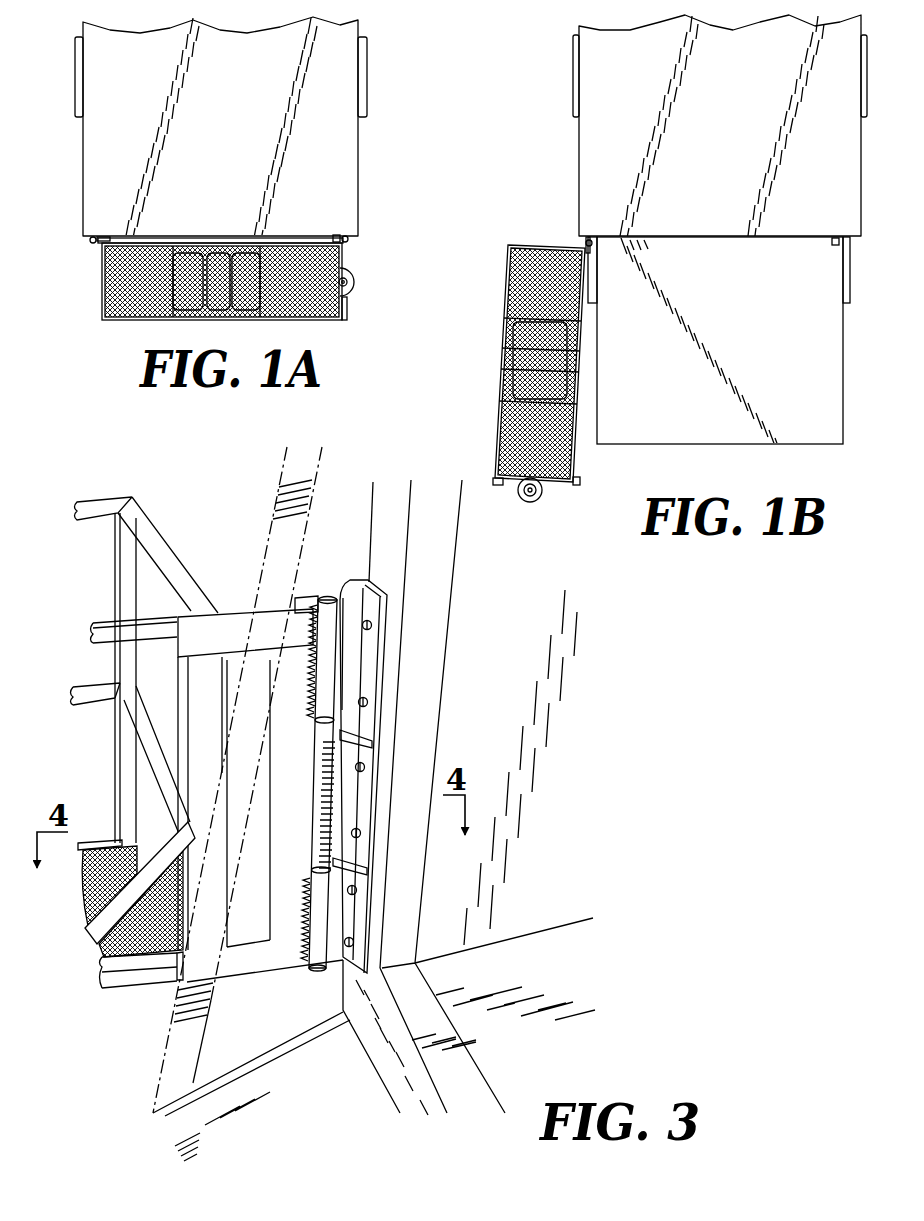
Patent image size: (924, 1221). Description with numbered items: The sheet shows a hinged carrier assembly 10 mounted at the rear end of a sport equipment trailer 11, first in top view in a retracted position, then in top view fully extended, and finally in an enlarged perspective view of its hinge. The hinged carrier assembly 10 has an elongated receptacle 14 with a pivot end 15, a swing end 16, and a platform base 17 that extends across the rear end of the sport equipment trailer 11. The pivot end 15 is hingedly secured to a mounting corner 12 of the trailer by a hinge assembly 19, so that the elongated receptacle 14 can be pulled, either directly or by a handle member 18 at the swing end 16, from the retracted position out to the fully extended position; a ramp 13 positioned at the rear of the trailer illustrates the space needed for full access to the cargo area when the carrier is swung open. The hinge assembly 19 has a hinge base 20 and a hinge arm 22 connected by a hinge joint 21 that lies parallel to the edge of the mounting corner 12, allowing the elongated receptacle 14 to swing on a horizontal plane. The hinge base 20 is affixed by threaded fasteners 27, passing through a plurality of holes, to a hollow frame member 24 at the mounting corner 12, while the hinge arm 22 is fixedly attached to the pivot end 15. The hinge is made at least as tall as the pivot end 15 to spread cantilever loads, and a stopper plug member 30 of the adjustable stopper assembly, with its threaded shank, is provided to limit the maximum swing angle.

In FIG. 1A, the hinged carrier assembly 10 is at (222, 314).
In FIG. 1B, the hinged carrier assembly 10 is at (512, 376).
In FIG. 1A, the sport equipment trailer 11 is at (385, 92).
In FIG. 1B, the sport equipment trailer 11 is at (557, 86).
In FIG. 1A, the mounting corner 12 is at (89, 241).
In FIG. 1B, the mounting corner 12 is at (586, 239).
In FIG. 1B, the ramp 13 is at (820, 370).
In FIG. 3, the ramp 13 is at (173, 1117).
In FIG. 1A, the elongated receptacle 14 is at (121, 326).
In FIG. 1B, the elongated receptacle 14 is at (497, 360).
In FIG. 3, the elongated receptacle 14 is at (195, 736).
In FIG. 1A, the pivot end 15 is at (101, 303).
In FIG. 1B, the pivot end 15 is at (541, 246).
In FIG. 3, the pivot end 15 is at (152, 537).
In FIG. 1A, the swing end 16 is at (343, 262).
In FIG. 1B, the swing end 16 is at (560, 495).
In FIG. 1A, the platform base 17 is at (318, 314).
In FIG. 1B, the platform base 17 is at (501, 441).
In FIG. 3, the platform base 17 is at (83, 878).
In FIG. 1A, the handle member 18 is at (348, 305).
In FIG. 1B, the handle member 18 is at (502, 491).
In FIG. 1A, the hinge assembly 19 is at (80, 246).
In FIG. 1B, the hinge assembly 19 is at (565, 235).
In FIG. 3, the hinge assembly 19 is at (417, 722).
In FIG. 3, the hinge base 20 is at (369, 667).
In FIG. 3, the hinge joint 21 is at (327, 596).
In FIG. 3, the hinge arm 22 is at (223, 632).
In FIG. 3, the hollow frame member 24 is at (400, 878).
In FIG. 3, the threaded fasteners 27 is at (372, 624).
In FIG. 3, the stopper plug member 30 is at (300, 598).